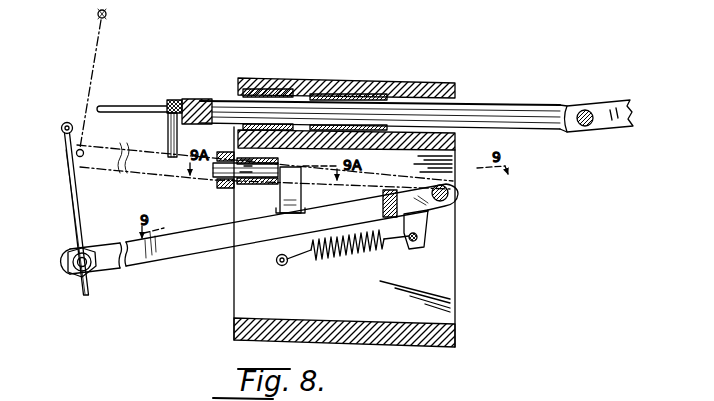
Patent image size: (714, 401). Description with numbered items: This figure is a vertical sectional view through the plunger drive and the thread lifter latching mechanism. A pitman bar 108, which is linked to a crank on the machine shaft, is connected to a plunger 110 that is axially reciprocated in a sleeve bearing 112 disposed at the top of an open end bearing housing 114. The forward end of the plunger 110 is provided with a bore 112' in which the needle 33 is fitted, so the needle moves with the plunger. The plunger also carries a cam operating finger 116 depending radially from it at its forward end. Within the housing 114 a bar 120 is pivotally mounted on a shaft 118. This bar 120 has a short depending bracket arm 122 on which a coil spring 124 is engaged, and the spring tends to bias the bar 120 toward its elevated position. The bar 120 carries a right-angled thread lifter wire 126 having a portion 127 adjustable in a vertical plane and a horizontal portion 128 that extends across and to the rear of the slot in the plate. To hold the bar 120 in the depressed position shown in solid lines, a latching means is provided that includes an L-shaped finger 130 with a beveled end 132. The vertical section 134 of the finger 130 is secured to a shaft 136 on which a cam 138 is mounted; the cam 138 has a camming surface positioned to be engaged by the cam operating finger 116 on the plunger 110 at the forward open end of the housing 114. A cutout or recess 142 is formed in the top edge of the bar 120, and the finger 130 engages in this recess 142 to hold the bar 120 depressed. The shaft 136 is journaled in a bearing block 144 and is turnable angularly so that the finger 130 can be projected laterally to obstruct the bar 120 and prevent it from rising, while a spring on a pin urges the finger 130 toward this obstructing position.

The needle 33 is at (143, 106).
The pitman bar 108 is at (603, 122).
The plunger 110 is at (223, 102).
The sleeve bearing 112 is at (315, 90).
The bore 112' is at (184, 95).
The bearing housing 114 is at (363, 83).
The cam operating finger 116 is at (168, 137).
The shaft 118 is at (449, 204).
The bar 120 is at (201, 240).
The bracket arm 122 is at (427, 228).
The coil spring 124 is at (343, 253).
The thread lifter wire 126 is at (74, 224).
The portion 127 is at (73, 189).
The horizontal portion 128 is at (68, 122).
The L-shaped finger 130 is at (234, 206).
The beveled end 132 is at (270, 218).
The vertical section 134 is at (297, 210).
The shaft 136 is at (213, 183).
The cam 138 is at (228, 152).
The recess 142 is at (285, 214).
The bearing block 144 is at (255, 160).